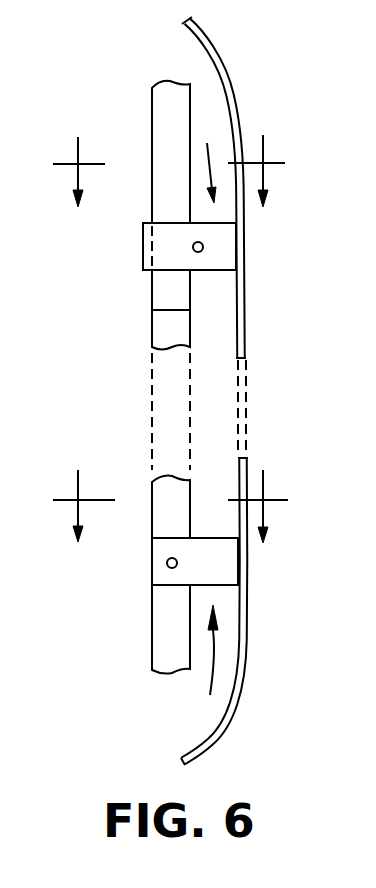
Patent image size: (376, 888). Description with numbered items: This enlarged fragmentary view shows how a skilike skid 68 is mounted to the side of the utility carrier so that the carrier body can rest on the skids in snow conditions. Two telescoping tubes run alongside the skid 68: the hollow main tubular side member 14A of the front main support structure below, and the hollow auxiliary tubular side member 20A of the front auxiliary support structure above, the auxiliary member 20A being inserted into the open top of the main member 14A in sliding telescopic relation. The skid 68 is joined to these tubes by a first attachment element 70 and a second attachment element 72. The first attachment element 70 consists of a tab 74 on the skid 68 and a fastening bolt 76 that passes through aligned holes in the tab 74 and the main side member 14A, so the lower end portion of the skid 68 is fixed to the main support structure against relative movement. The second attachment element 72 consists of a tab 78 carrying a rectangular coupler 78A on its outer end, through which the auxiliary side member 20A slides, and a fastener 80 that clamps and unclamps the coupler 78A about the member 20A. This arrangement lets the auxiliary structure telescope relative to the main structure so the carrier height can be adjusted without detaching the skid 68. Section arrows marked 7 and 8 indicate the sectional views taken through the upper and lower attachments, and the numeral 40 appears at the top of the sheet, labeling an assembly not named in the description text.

The bow assembly 40 is at (357, 13).
The auxiliary tubular side member 20A is at (152, 117).
The main tubular side member 14A is at (152, 633).
The skid 68 is at (247, 105).
The tab 78 is at (226, 254).
The rectangular coupler 78A is at (143, 253).
The fastener 80 is at (203, 252).
The tab 74 is at (232, 562).
The fastening bolt 76 is at (167, 563).
The second attachment element 72 is at (214, 156).
The first attachment element 70 is at (194, 664).
The section line 7- 7 is at (170, 166).
The section line 8- 8 is at (171, 504).